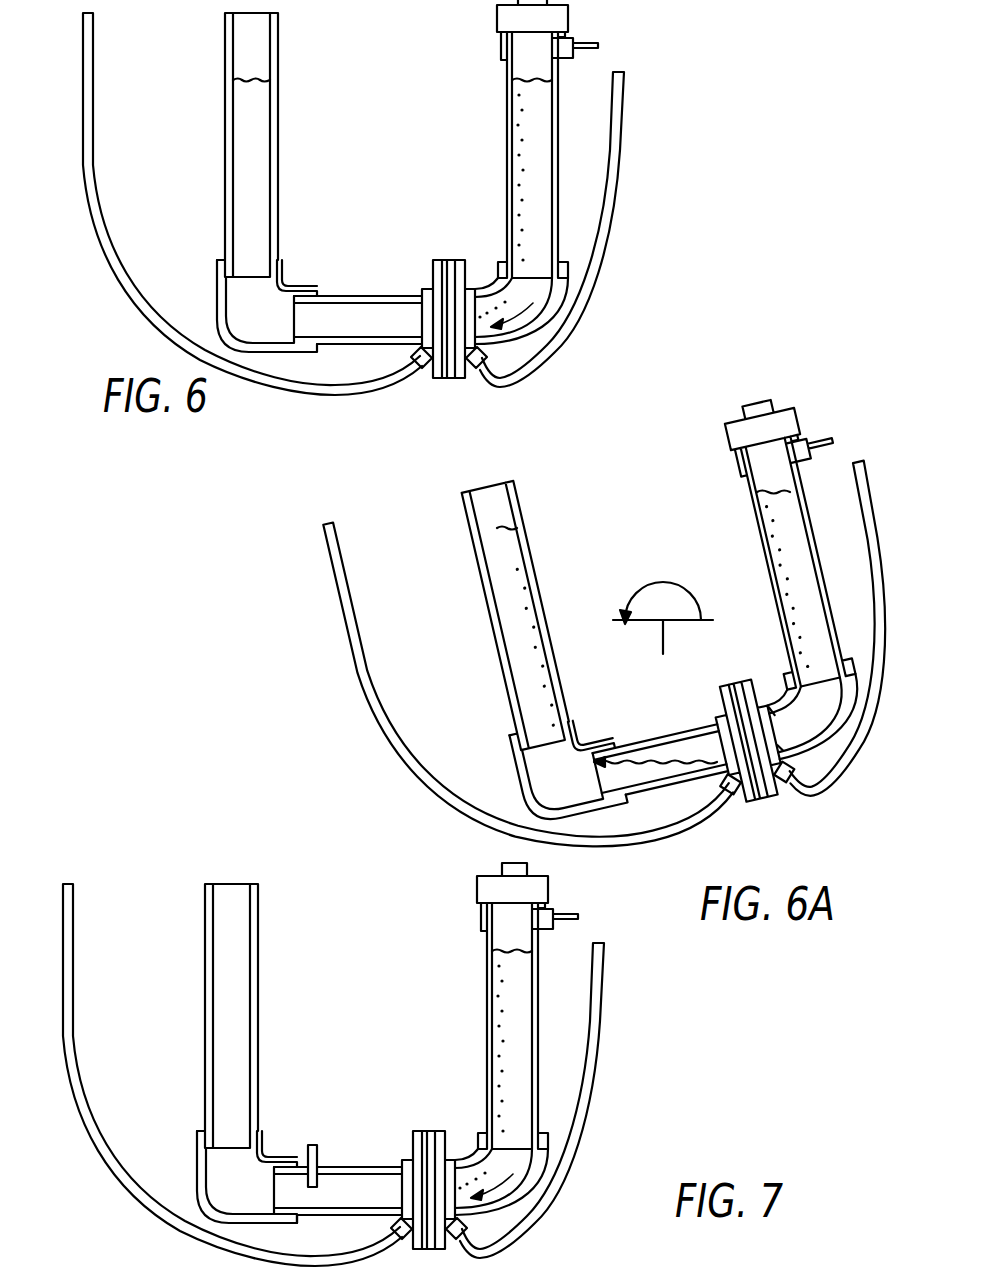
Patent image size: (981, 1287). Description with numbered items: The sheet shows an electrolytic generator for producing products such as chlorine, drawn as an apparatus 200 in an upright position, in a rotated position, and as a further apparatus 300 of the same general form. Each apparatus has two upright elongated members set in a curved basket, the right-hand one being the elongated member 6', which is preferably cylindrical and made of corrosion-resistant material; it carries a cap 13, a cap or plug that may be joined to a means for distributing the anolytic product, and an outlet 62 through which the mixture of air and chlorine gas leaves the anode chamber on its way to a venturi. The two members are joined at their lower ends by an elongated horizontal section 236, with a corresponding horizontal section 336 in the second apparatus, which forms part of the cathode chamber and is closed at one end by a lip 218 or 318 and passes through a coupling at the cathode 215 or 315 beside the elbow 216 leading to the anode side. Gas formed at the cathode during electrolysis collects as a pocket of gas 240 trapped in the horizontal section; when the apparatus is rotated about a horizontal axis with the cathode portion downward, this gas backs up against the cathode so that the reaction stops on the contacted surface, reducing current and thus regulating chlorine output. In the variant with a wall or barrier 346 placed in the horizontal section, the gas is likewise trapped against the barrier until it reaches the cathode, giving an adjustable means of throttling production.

In FIG. 6, the rotatable mixing apparatus 200 is at (353, 211).
In FIG. 6, the lip 218 is at (281, 264).
In FIG. 6, the conduit 236 is at (373, 295).
In FIG. 6A, the conduit 236 is at (664, 783).
In FIG. 6, the coupling 215 is at (448, 374).
In FIG. 6A, the coupling 215 is at (725, 706).
In FIG. 6A, the fluid passage 240 is at (675, 747).
In FIG. 6A, the elbow 216 is at (762, 731).
In FIG. 7, the mixing apparatus 300 is at (340, 1056).
In FIG. 7, the cap 13 is at (479, 861).
In FIG. 7, the outlet 62 is at (575, 902).
In FIG. 7, the elongated member 6' is at (492, 1012).
In FIG. 7, the lip 318 is at (299, 1167).
In FIG. 7, the baffle 346 is at (344, 1140).
In FIG. 7, the conduit 336 is at (338, 1170).
In FIG. 7, the coupling 315 is at (429, 1156).